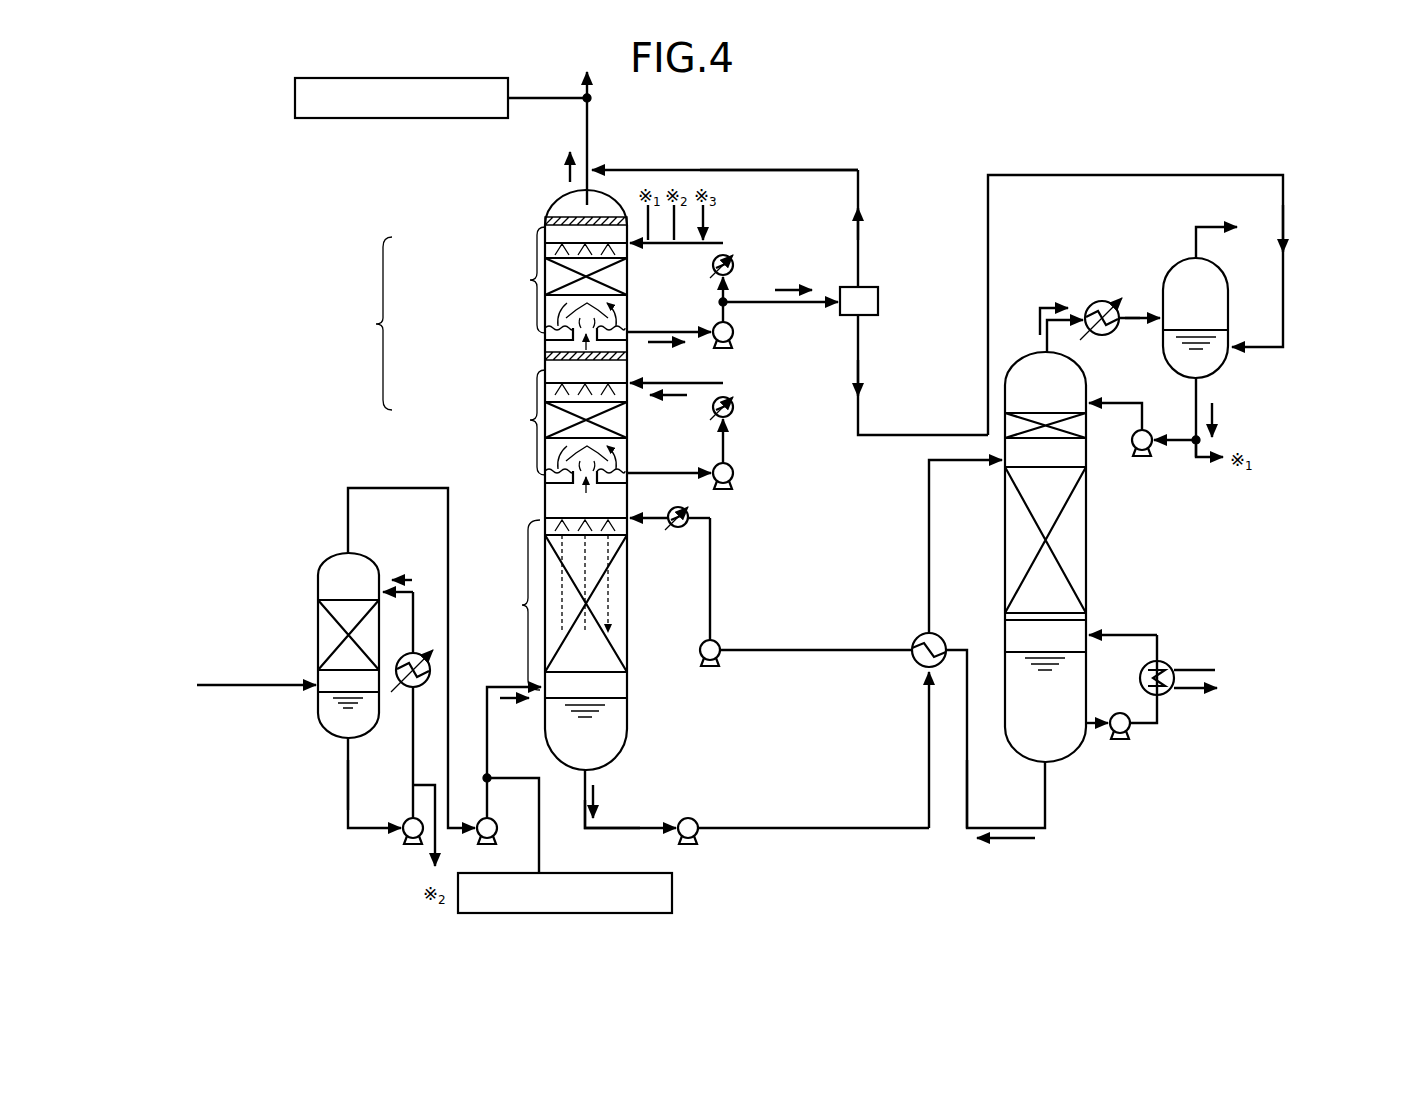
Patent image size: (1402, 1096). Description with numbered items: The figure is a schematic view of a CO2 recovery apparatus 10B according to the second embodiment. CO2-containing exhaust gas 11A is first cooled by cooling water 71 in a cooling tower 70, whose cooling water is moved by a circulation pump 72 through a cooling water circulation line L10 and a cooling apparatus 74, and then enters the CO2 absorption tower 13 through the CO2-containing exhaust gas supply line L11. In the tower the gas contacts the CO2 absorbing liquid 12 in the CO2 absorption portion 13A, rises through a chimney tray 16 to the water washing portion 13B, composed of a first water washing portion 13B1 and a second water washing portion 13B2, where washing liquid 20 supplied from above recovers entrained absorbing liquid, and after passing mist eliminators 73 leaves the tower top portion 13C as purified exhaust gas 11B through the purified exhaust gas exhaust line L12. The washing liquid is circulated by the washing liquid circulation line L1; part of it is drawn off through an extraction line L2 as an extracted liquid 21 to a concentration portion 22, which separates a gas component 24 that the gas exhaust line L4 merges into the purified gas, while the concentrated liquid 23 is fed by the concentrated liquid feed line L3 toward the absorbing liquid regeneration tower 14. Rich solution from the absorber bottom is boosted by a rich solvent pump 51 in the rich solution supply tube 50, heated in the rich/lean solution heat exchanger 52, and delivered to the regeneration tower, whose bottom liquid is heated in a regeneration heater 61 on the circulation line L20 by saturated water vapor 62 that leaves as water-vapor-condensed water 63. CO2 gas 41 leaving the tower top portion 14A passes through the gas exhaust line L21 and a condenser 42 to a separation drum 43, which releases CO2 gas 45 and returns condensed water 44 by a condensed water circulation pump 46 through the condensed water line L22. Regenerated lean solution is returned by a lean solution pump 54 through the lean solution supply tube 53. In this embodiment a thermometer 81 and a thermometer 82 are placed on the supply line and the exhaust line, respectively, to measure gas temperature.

The CO2 recovery apparatus 10B is at (783, 95).
The CO2-containing exhaust gas 11A is at (250, 688).
The purified exhaust gas 11B is at (565, 165).
The CO2 absorbing liquid 12 is at (672, 527).
The CO2 absorption tower 13 is at (528, 218).
The CO2 absorption portion 13A is at (522, 605).
The water washing portion 13B is at (362, 323).
The first water washing portion 13B1 is at (530, 420).
The second water washing portion 13B2 is at (530, 280).
The tower top portion 13C is at (600, 180).
The absorbing liquid regeneration tower 14 is at (1095, 540).
The tower top portion 14A is at (1080, 360).
The chimney tray 16 is at (578, 316).
The washing liquid 20 is at (668, 345).
The extracted liquid 21 is at (795, 285).
The concentration portion 22 is at (853, 315).
The concentrated liquid 23 is at (860, 375).
The gas component (water vapor) 24 is at (860, 228).
The CO2 gas 41 is at (1040, 304).
The condenser 42 is at (1100, 300).
The separation drum 43 is at (1229, 290).
The condensed water 44 is at (1214, 415).
The CO2 gas 45 is at (1200, 222).
The condensed water circulation pump 46 is at (1146, 430).
The rich solution supply tube 50 is at (655, 838).
The rich solvent pump 51 is at (695, 835).
The rich/lean solution heat exchanger 52 is at (912, 660).
The lean solution supply tube 53 is at (965, 780).
The lean solution pump 54 is at (715, 642).
The regeneration heater 61 is at (1160, 662).
The saturated water vapor 62 is at (1200, 668).
The water-vapor-condensed water 63 is at (1200, 692).
The cooling tower 70 is at (297, 520).
The cooling water 71 is at (405, 576).
The circulation pump 72 is at (405, 840).
The mist eliminator 73 is at (565, 215).
The cooling apparatus 74 is at (415, 652).
The thermometer 81 is at (672, 893).
The thermometer 82 is at (498, 78).
The washing liquid circulation line L1 is at (724, 243).
The extraction line L2 is at (790, 305).
The concentrated liquid feed line L3 is at (1092, 175).
The gas exhaust line L4 is at (798, 168).
The cooling water circulation line L10 is at (348, 795).
The CO2-containing exhaust gas supply line L11 is at (488, 800).
The purified exhaust gas exhaust line L12 is at (590, 125).
The circulation line L20 is at (1124, 635).
The gas exhaust line L21 is at (1142, 315).
The condensed water line L22 is at (1183, 442).